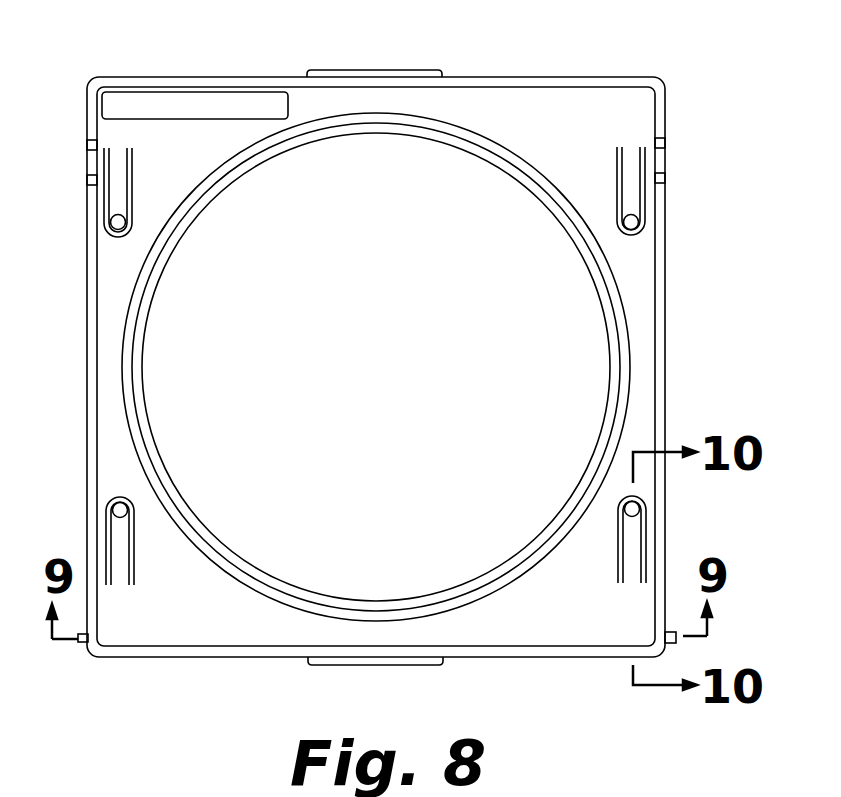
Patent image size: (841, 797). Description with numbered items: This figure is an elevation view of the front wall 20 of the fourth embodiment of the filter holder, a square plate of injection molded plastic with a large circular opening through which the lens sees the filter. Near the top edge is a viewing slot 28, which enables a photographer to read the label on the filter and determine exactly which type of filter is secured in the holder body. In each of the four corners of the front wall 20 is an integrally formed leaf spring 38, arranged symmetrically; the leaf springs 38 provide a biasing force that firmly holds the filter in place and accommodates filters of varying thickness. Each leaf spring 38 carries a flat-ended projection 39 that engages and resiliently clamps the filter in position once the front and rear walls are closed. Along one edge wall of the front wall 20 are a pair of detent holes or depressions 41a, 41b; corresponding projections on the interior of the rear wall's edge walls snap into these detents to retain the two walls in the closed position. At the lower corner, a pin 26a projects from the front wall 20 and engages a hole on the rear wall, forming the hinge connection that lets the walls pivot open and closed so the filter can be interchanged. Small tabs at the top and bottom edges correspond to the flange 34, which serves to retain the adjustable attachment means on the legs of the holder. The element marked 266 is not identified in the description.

The front wall 20 is at (665, 352).
The viewing slot 28 is at (157, 93).
The flange 34 is at (371, 70).
The leaf spring 38 is at (120, 205).
The flat-ended projection 39 is at (117, 232).
The detent hole 41a is at (662, 143).
The detent hole 41b is at (662, 178).
The pin 26a is at (83, 645).
The tab 266 is at (672, 642).